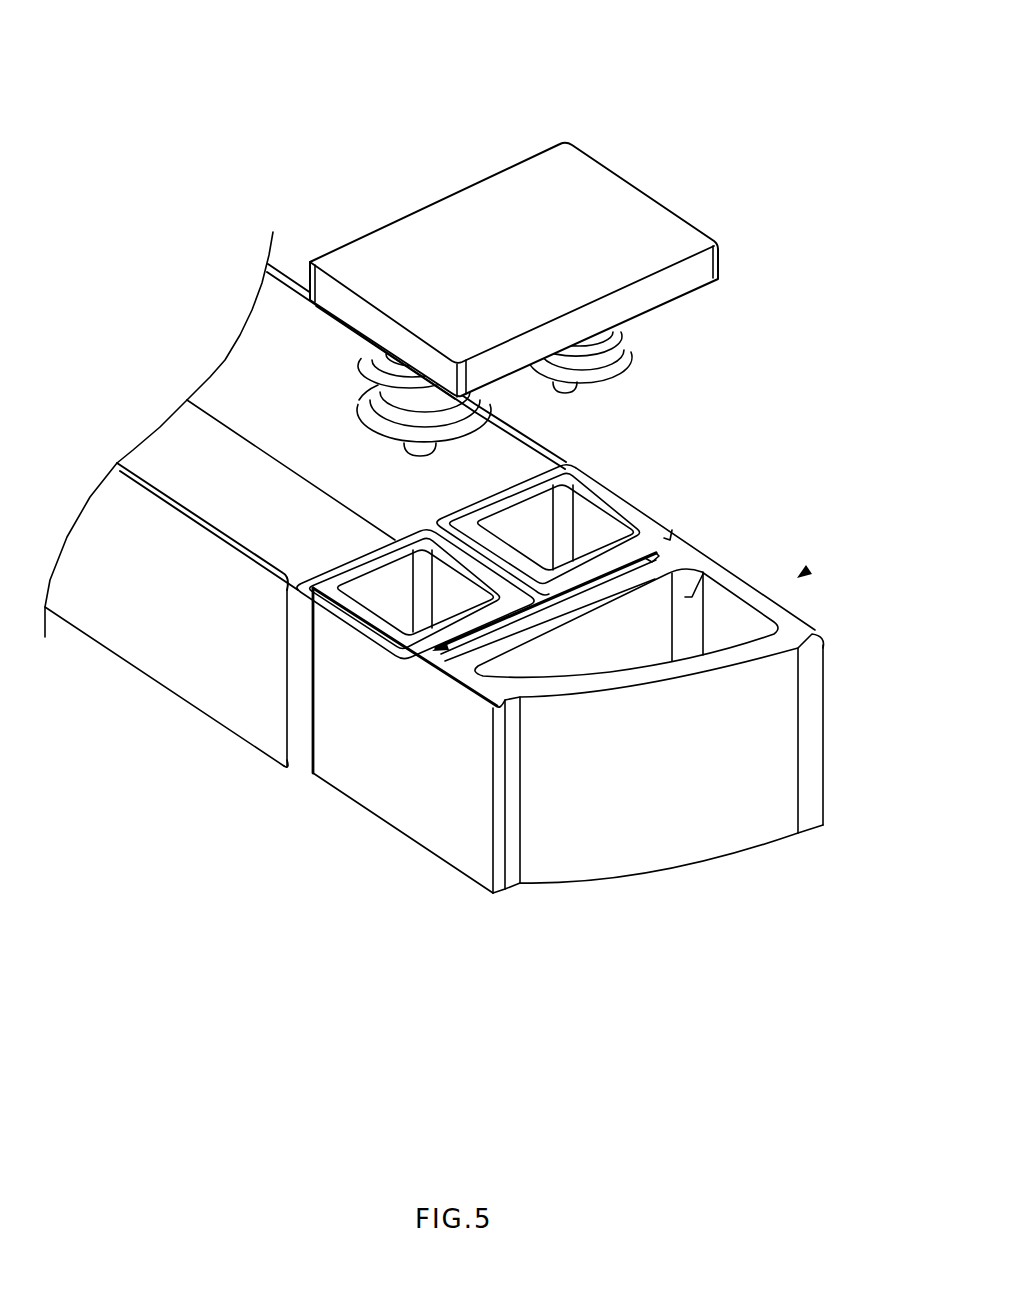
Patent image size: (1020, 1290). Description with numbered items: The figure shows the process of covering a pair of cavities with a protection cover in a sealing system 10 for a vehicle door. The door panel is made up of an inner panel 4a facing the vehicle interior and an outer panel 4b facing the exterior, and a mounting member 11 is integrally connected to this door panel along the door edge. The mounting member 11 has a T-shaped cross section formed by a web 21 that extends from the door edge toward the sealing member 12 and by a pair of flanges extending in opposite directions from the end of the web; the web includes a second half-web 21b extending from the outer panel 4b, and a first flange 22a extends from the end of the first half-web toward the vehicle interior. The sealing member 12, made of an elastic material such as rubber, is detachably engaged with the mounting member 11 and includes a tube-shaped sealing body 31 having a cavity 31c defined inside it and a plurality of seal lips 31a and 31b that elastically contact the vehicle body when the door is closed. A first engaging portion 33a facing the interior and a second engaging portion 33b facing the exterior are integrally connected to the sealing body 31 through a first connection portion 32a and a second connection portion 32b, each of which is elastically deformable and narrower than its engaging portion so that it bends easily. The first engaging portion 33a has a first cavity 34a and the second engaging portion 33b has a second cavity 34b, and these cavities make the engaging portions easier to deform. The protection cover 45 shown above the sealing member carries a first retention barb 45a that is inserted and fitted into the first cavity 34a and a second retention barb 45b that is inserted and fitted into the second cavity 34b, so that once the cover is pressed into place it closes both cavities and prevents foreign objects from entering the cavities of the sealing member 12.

The sealing system 10 is at (648, 42).
The inner panel 4a is at (213, 610).
The outer panel 4b is at (508, 428).
The mounting member 11 is at (672, 530).
The sealing member 12 is at (801, 574).
The web 21 is at (462, 567).
The second half-web 21b is at (637, 535).
The first flange 22a is at (457, 643).
The sealing body 31 is at (728, 862).
The seal lip 31a is at (495, 843).
The seal lip 31b is at (820, 722).
The cavity 31c is at (703, 572).
The first connection portion 32a is at (427, 656).
The second connection portion 32b is at (673, 540).
The first engaging portion 33a is at (355, 605).
The second engaging portion 33b is at (627, 510).
The first cavity 34a is at (390, 594).
The second cavity 34b is at (538, 525).
The protection cover 45 is at (608, 178).
The first retention barb 45a is at (393, 432).
The second retention barb 45b is at (600, 360).